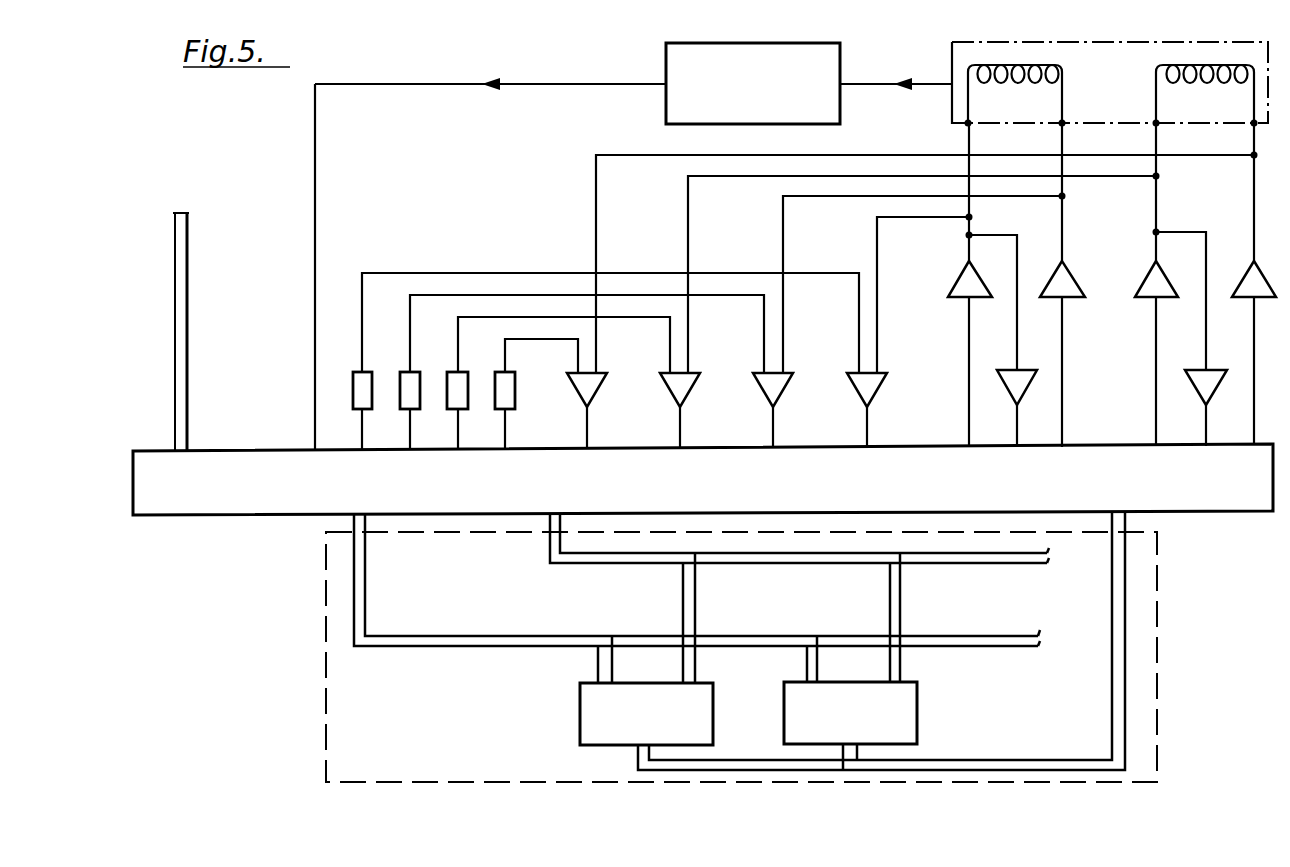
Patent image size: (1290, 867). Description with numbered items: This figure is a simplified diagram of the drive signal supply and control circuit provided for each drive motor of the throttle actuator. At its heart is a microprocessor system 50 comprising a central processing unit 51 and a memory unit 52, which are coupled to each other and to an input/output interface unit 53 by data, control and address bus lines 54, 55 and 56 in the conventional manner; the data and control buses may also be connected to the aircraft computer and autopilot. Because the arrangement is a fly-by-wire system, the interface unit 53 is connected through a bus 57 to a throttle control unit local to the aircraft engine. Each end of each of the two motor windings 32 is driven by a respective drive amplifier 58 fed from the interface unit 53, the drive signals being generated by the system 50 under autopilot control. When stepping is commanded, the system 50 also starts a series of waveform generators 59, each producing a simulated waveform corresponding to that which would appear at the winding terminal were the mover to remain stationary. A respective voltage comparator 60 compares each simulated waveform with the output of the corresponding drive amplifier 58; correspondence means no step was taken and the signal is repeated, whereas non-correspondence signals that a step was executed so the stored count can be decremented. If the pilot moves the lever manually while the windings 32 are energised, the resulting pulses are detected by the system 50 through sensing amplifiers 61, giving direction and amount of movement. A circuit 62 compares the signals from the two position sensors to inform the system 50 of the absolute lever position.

The motor windings 32 is at (1012, 82).
The microprocessor system 50 is at (326, 646).
The central processing unit 51 is at (580, 712).
The memory unit 52 is at (790, 706).
The input/output interface unit 53 is at (262, 463).
The data bus line 54 is at (1005, 563).
The control bus line 55 is at (1012, 647).
The address bus line 56 is at (1018, 768).
The bus 57 is at (185, 325).
The drive amplifier 58 is at (957, 280).
The waveform generator 59 is at (398, 400).
The voltage comparator 60 is at (668, 385).
The sensing amplifier 61 is at (1010, 392).
The circuit 62 is at (838, 60).